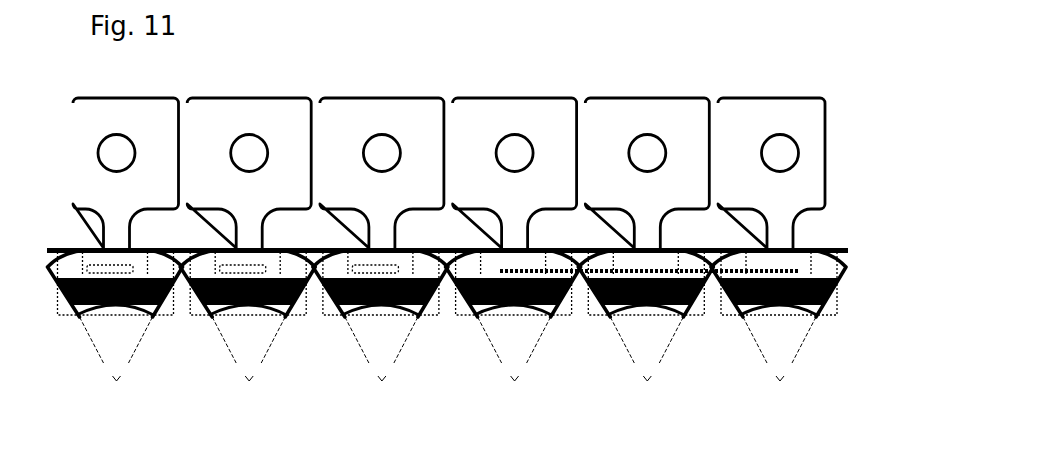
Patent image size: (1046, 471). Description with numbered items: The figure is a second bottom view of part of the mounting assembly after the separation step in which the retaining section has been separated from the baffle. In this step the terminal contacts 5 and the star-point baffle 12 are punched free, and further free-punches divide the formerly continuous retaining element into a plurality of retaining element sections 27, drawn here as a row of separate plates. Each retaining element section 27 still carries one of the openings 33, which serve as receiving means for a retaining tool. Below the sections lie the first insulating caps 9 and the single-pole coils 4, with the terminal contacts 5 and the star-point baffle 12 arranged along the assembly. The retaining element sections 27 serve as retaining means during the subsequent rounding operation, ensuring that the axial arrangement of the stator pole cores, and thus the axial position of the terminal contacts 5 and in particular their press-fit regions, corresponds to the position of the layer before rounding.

The single-pole coil 4 is at (838, 295).
The terminal contact 5 is at (110, 268).
The first insulating cap 9 is at (148, 307).
The star-point baffle 12 is at (750, 262).
The retaining element section 27 is at (255, 110).
The opening 33 is at (643, 153).